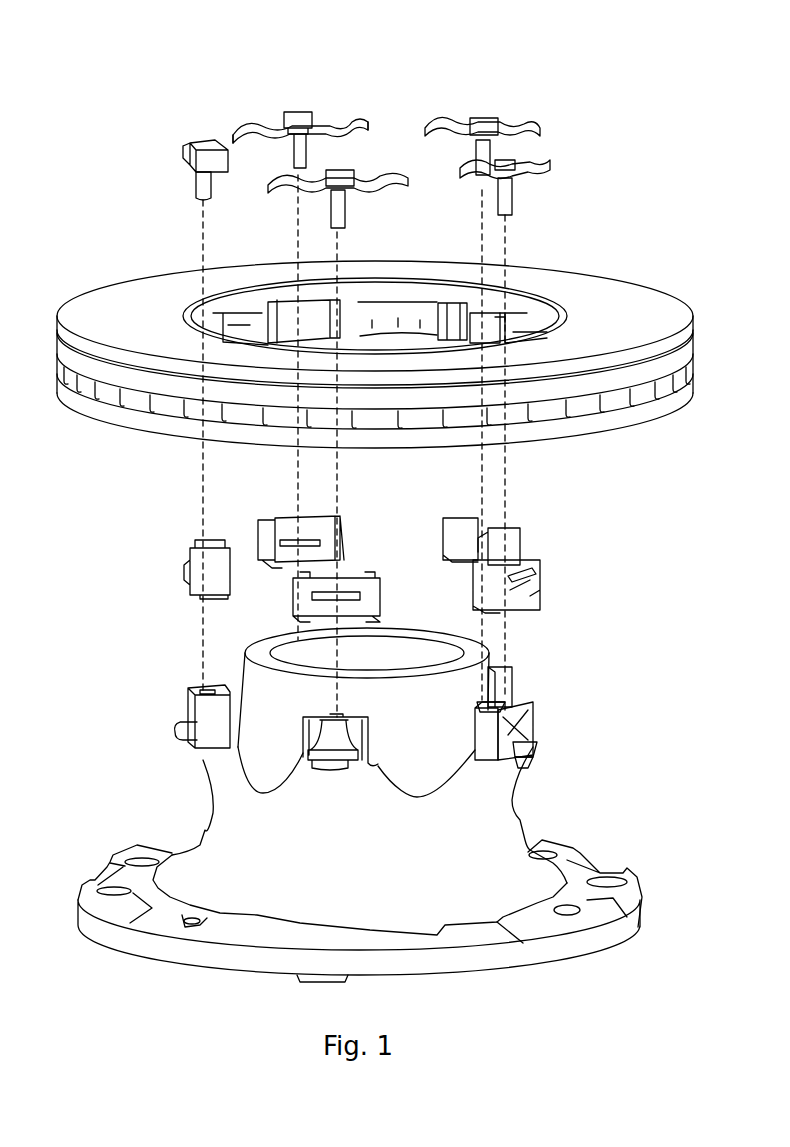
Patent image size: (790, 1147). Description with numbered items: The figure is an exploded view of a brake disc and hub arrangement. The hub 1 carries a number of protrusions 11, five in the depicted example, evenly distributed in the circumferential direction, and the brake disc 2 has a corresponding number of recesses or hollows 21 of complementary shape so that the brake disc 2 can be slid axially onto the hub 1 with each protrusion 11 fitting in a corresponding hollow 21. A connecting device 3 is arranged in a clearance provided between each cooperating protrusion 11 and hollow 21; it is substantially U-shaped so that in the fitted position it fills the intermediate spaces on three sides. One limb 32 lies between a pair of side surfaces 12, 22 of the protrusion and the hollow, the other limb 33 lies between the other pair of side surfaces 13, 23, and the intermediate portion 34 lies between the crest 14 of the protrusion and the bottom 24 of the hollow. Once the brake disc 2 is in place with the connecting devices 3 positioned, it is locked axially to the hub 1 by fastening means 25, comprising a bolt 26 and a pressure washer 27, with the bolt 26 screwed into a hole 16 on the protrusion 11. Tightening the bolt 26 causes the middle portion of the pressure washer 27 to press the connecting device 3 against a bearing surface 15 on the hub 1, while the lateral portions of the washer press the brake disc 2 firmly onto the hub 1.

The hub 1 is at (495, 822).
The brake disc 2 is at (637, 300).
The connecting device 3 is at (545, 597).
The protrusion 11 is at (523, 700).
The side surface 12 is at (480, 727).
The side surface 13 is at (533, 723).
The crest 14 is at (530, 730).
The bearing surface 15 is at (525, 752).
The hole 16 is at (475, 700).
The hollow 21 is at (478, 305).
The side surface 22 is at (455, 313).
The side surface 23 is at (515, 312).
The bottom 24 is at (495, 322).
The fastening means 25 is at (272, 92).
The bolt 26 is at (292, 108).
The pressure washer 27 is at (332, 110).
The limb 32 is at (472, 588).
The limb 33 is at (532, 555).
The intermediate portion 34 is at (552, 588).